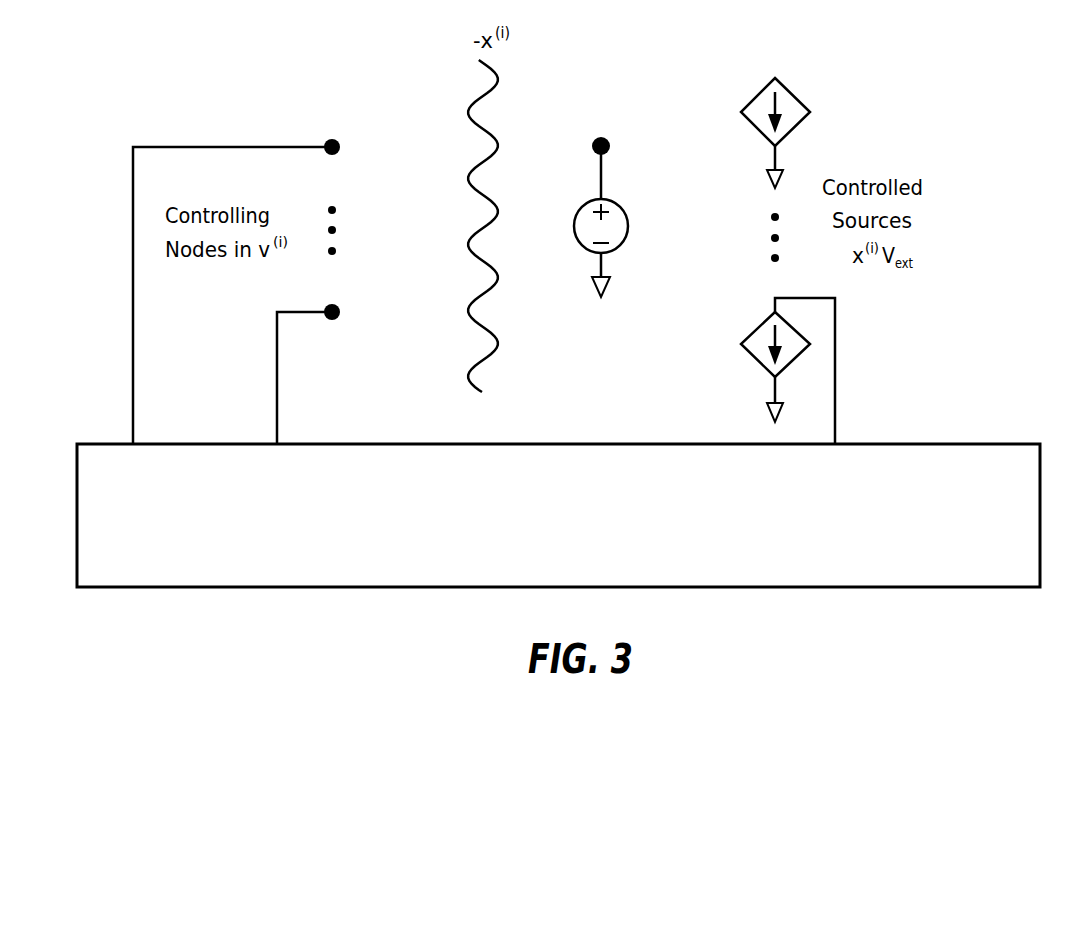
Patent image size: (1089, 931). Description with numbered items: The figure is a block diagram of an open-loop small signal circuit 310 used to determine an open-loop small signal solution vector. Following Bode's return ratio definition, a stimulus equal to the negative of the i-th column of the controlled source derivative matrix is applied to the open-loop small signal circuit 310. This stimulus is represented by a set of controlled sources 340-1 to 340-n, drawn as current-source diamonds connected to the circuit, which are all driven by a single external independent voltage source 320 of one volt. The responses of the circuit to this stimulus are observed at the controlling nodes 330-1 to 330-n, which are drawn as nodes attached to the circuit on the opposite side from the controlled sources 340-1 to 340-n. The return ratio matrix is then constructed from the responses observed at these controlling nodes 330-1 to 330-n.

The open-loop small signal circuit 310 is at (597, 556).
The external independent voltage source 320 is at (581, 204).
The controlling node 330-1 is at (334, 140).
The controlling node 330-n is at (334, 305).
The controlled source 340-1 is at (752, 104).
The controlled source 340-n is at (753, 336).